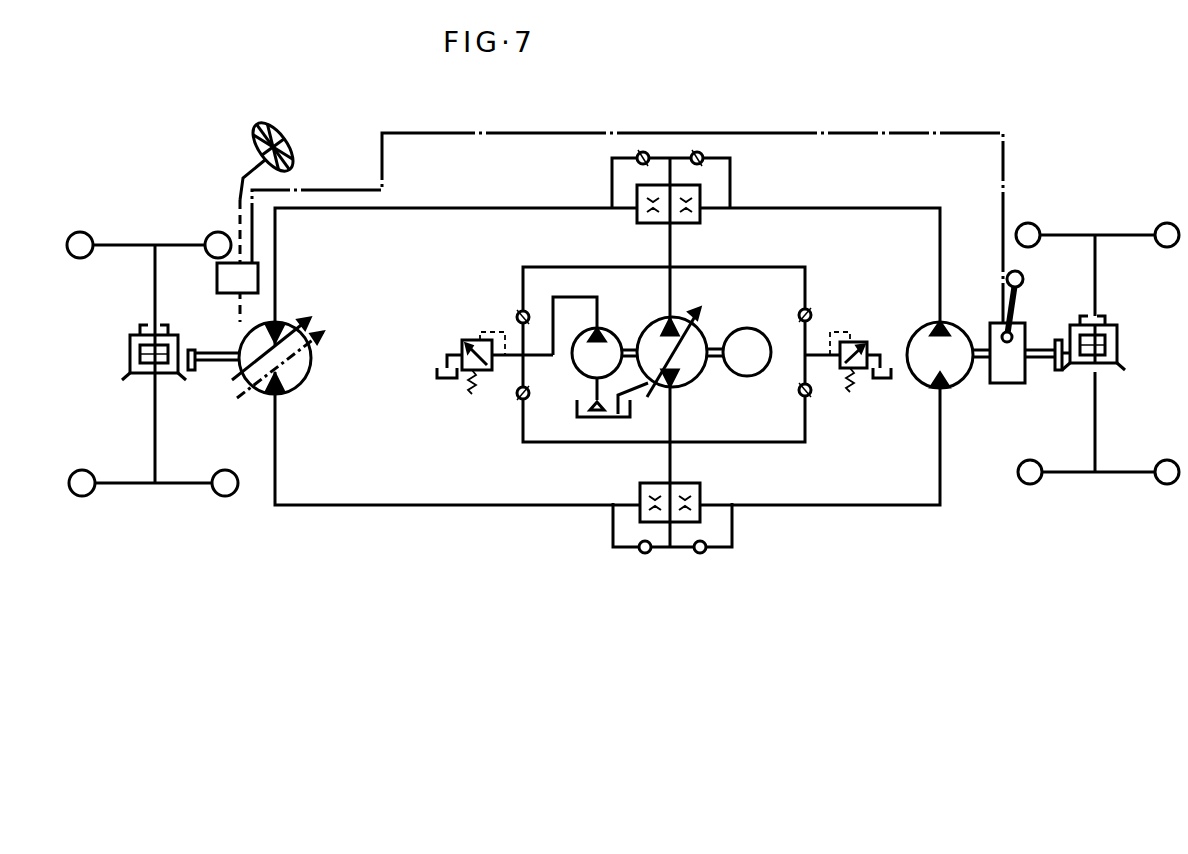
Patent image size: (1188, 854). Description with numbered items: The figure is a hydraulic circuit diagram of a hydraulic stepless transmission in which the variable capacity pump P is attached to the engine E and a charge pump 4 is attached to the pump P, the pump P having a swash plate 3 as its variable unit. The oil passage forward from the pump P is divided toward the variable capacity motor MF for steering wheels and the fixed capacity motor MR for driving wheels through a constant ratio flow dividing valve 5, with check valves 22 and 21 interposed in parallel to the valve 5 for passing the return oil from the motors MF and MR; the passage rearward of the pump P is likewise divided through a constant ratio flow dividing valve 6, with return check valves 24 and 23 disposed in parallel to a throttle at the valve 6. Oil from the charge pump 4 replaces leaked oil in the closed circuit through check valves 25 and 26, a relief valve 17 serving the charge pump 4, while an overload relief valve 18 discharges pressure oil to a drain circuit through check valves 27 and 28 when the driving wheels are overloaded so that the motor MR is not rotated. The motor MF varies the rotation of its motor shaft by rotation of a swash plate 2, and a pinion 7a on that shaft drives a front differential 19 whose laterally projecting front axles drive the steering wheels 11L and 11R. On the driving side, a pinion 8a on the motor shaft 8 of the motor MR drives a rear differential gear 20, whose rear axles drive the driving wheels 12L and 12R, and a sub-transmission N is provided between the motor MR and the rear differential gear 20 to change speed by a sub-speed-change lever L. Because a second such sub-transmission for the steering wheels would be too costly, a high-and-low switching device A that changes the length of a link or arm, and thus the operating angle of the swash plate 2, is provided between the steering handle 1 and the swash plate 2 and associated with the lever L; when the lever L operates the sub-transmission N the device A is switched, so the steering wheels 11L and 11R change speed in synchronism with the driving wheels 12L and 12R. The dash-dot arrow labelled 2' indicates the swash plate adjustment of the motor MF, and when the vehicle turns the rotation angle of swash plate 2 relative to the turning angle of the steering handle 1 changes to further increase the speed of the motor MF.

The steering handle 1 is at (291, 145).
The swash plate 2 is at (271, 333).
The displacement control of front motor 2' is at (296, 357).
The swash plate 3 is at (696, 316).
The charge pump 4 is at (611, 331).
The constant ratio flow dividing valve 5 is at (701, 224).
The constant ratio flow dividing valve 6 is at (701, 491).
The pinion 7a is at (191, 350).
The motor shaft 8 is at (1043, 360).
The pinion 8a is at (1058, 340).
The steering wheel 11R is at (137, 245).
The steering wheel 11L is at (152, 485).
The driving wheel 12R is at (1080, 233).
The driving wheel 12L is at (1081, 475).
The relief valve 17 is at (472, 340).
The overload relief valve 18 is at (863, 340).
The front differential 19 is at (124, 348).
The rear differential gear 20 is at (1126, 347).
The check valve 21 is at (706, 153).
The check valve 22 is at (635, 154).
The return check valve 23 is at (705, 553).
The return check valve 24 is at (641, 553).
The check valve 25 is at (517, 311).
The check valve 26 is at (517, 401).
The check valve 27 is at (811, 311).
The check valve 28 is at (811, 397).
The high-and-low switching device A is at (237, 278).
The engine E is at (747, 352).
The sub-speed-change lever L is at (1001, 300).
The variable capacity motor for steering wheels MF is at (298, 390).
The fixed capacity motor for driving wheels MR is at (952, 389).
The sub-transmission N is at (1008, 385).
The variable capacity pump P is at (690, 381).